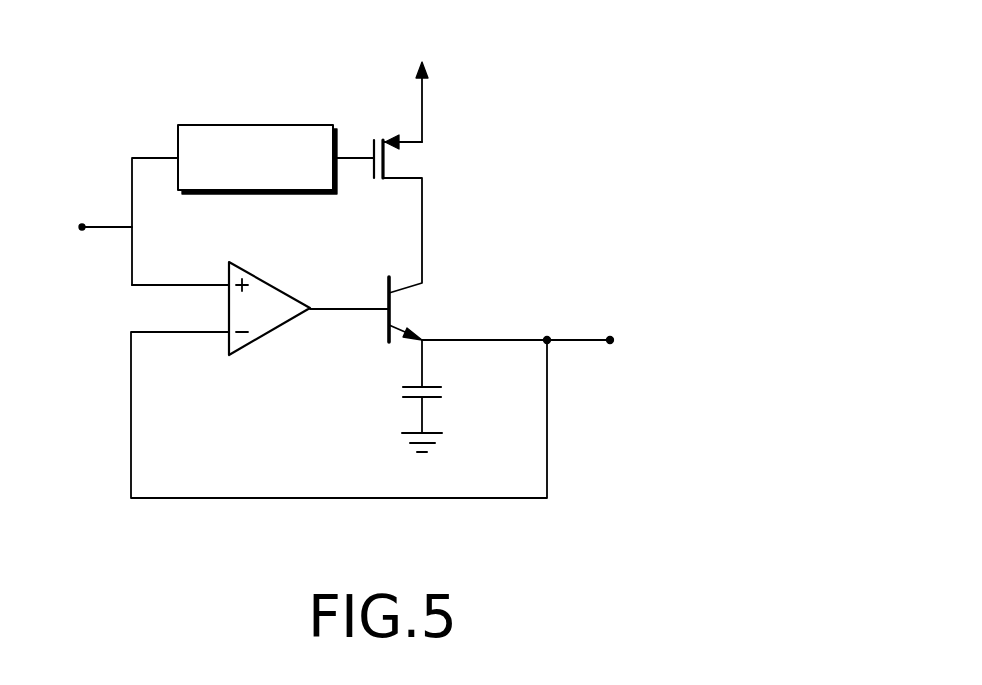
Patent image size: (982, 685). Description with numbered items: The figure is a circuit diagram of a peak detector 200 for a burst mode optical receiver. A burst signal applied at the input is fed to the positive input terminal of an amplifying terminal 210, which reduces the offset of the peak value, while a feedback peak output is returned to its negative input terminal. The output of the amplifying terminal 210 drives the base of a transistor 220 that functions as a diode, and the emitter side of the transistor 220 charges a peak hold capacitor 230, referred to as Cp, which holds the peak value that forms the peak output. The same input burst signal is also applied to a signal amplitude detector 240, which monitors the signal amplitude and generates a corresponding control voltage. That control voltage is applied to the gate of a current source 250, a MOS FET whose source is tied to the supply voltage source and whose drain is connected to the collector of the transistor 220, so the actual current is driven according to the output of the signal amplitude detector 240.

The peak detector 200 is at (590, 94).
The amplifying terminal 210 is at (265, 278).
The transistor 220 is at (428, 307).
The peak hold capacitor 230 is at (445, 393).
The signal amplitude detector 240 is at (285, 125).
The current source 250 is at (420, 158).